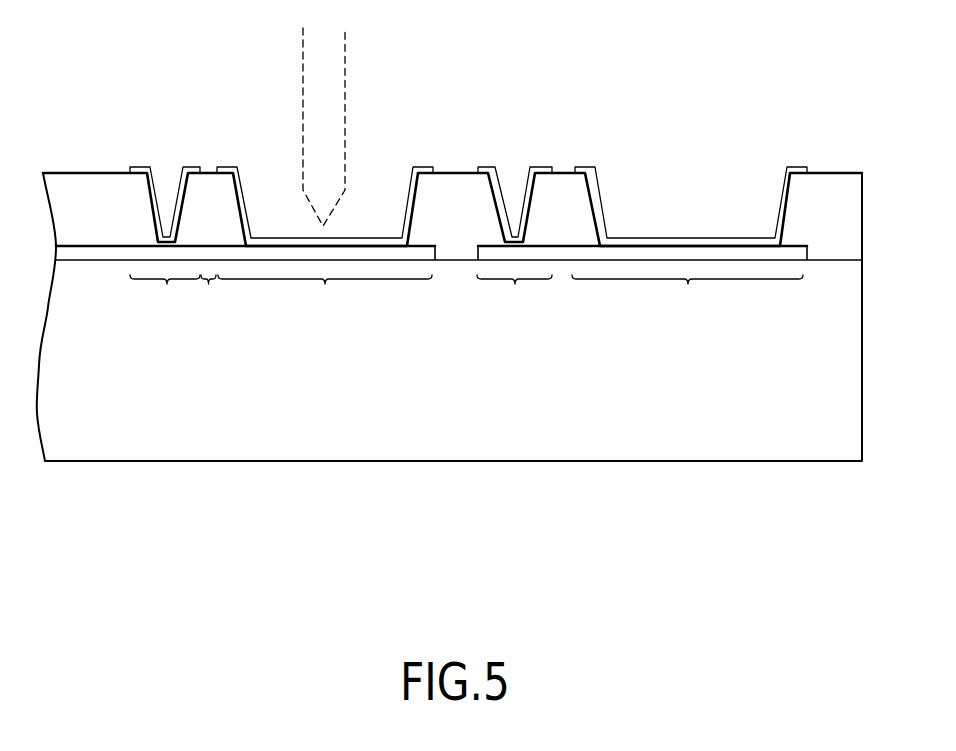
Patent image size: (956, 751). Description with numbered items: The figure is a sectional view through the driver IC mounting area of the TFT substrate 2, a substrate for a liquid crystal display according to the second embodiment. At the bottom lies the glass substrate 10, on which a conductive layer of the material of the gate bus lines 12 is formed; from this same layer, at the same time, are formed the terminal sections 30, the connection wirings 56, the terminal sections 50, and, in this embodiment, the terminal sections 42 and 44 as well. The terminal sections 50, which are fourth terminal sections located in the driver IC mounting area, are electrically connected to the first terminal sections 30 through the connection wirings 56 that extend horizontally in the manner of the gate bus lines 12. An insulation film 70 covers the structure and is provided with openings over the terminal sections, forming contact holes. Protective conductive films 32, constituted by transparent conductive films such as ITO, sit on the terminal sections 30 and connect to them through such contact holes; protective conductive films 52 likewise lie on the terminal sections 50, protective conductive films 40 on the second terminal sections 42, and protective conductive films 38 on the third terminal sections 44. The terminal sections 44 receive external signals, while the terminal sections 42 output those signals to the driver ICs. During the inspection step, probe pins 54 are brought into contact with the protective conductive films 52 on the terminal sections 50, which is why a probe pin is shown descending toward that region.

The TFT substrate 2 is at (660, 471).
The glass substrate 10 is at (837, 450).
The gate bus lines 12 is at (93, 262).
The terminal sections 30 is at (165, 297).
The protective conductive films 32 is at (137, 165).
The protective conductive films 38 is at (795, 165).
The protective conductive films 40 is at (537, 166).
The terminal sections 42 is at (514, 297).
The terminal sections 44 is at (687, 297).
The terminal sections 50 is at (325, 297).
The protective conductive films 52 is at (423, 166).
The probe pins 54 is at (347, 97).
The connection wirings 56 is at (207, 297).
The insulation film 70 is at (73, 185).